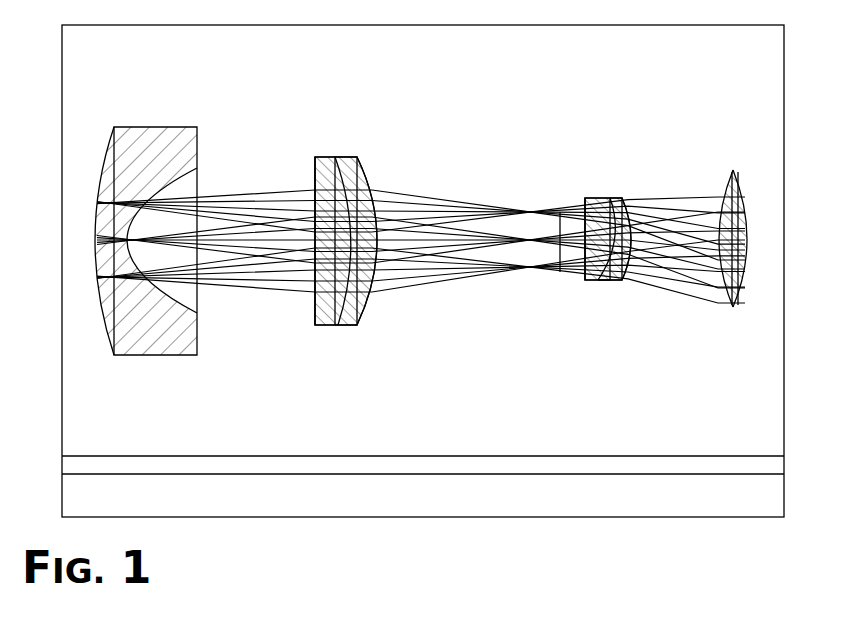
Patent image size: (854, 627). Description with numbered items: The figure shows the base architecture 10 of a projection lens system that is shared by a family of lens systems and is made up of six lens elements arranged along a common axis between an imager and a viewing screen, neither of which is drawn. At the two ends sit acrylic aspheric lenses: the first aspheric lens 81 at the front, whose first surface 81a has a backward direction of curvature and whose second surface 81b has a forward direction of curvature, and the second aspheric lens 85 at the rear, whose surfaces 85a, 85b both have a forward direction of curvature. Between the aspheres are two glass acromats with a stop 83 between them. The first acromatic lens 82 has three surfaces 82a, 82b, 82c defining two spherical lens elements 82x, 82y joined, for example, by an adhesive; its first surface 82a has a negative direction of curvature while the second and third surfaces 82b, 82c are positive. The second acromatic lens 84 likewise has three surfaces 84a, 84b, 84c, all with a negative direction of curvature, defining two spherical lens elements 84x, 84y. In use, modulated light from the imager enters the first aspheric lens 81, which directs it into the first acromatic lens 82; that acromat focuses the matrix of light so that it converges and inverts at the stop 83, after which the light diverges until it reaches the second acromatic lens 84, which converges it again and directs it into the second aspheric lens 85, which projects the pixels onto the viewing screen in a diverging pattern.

The base architecture 10 is at (709, 83).
The first aspheric lens 81 is at (724, 244).
The first surface of first aspheric lens 81a is at (748, 304).
The second surface of first aspheric lens 81b is at (722, 298).
The first acromatic lens 82 is at (591, 227).
The first surface of first acromatic lens 82a is at (634, 289).
The second surface of first acromatic lens 82b is at (597, 282).
The third surface of first acromatic lens 82c is at (582, 254).
The first lens element of first acromatic lens 82x is at (623, 198).
The second lens element of first acromatic lens 82y is at (593, 198).
The stop 83 is at (555, 196).
The second acromatic lens 84 is at (346, 223).
The first surface of second acromatic lens 84a is at (375, 308).
The second surface of second acromatic lens 84b is at (348, 316).
The third surface of second acromatic lens 84c is at (312, 314).
The first lens element of second acromatic lens 84x is at (350, 157).
The second lens element of second acromatic lens 84y is at (325, 157).
The second aspheric lens 85 is at (154, 237).
The surface of second aspheric lens 85a is at (197, 301).
The surface of second aspheric lens 85b is at (108, 345).